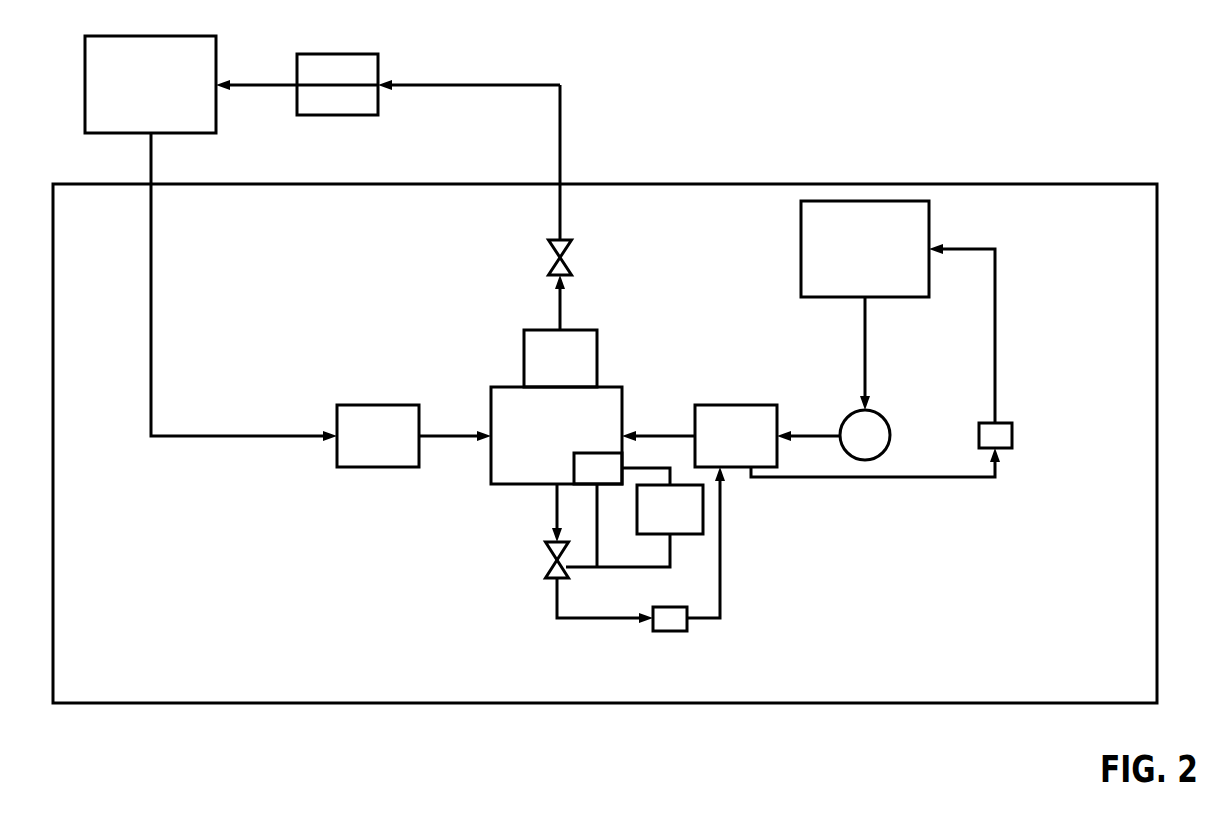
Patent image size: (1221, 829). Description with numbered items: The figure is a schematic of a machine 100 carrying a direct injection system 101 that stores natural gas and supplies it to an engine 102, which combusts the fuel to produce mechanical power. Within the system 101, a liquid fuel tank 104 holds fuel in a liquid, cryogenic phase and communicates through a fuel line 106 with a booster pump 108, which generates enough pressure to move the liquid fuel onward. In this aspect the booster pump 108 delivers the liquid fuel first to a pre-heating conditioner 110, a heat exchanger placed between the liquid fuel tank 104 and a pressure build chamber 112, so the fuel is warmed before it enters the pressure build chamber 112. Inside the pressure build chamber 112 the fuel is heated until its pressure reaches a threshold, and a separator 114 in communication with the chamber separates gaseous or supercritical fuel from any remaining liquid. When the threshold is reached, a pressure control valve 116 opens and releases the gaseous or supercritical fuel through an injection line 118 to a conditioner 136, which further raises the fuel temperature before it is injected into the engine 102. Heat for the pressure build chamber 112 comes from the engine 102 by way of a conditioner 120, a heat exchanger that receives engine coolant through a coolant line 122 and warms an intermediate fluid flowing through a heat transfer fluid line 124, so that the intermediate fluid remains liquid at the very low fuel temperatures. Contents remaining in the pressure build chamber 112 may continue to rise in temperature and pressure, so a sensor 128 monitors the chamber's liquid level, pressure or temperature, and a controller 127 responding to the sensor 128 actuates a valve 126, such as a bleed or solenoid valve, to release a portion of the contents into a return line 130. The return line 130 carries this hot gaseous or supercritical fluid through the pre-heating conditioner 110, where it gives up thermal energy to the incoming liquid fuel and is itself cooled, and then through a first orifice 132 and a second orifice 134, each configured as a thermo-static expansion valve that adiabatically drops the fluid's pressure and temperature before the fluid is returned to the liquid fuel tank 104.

The machine 100 is at (742, 107).
The system 101 is at (1100, 235).
The engine 102 is at (133, 94).
The liquid fuel tank 104 is at (848, 259).
The fuel line 106 is at (865, 350).
The booster pump 108 is at (848, 445).
The pre-heating conditioner 110 is at (719, 446).
The pressure build chamber 112 is at (540, 445).
The separator 114 is at (543, 368).
The pressure control valve 116 is at (552, 253).
The injection line 118 is at (560, 163).
The conditioner 120 is at (361, 446).
The coolant line 122 is at (277, 436).
The heat transfer fluid line 124 is at (448, 436).
The valve 126 is at (547, 550).
The controller 127 is at (653, 520).
The sensor 128 is at (581, 478).
The return line 130 is at (995, 343).
The first orifice 132 is at (668, 631).
The second orifice 134 is at (1012, 433).
The conditioner 136 is at (320, 94).